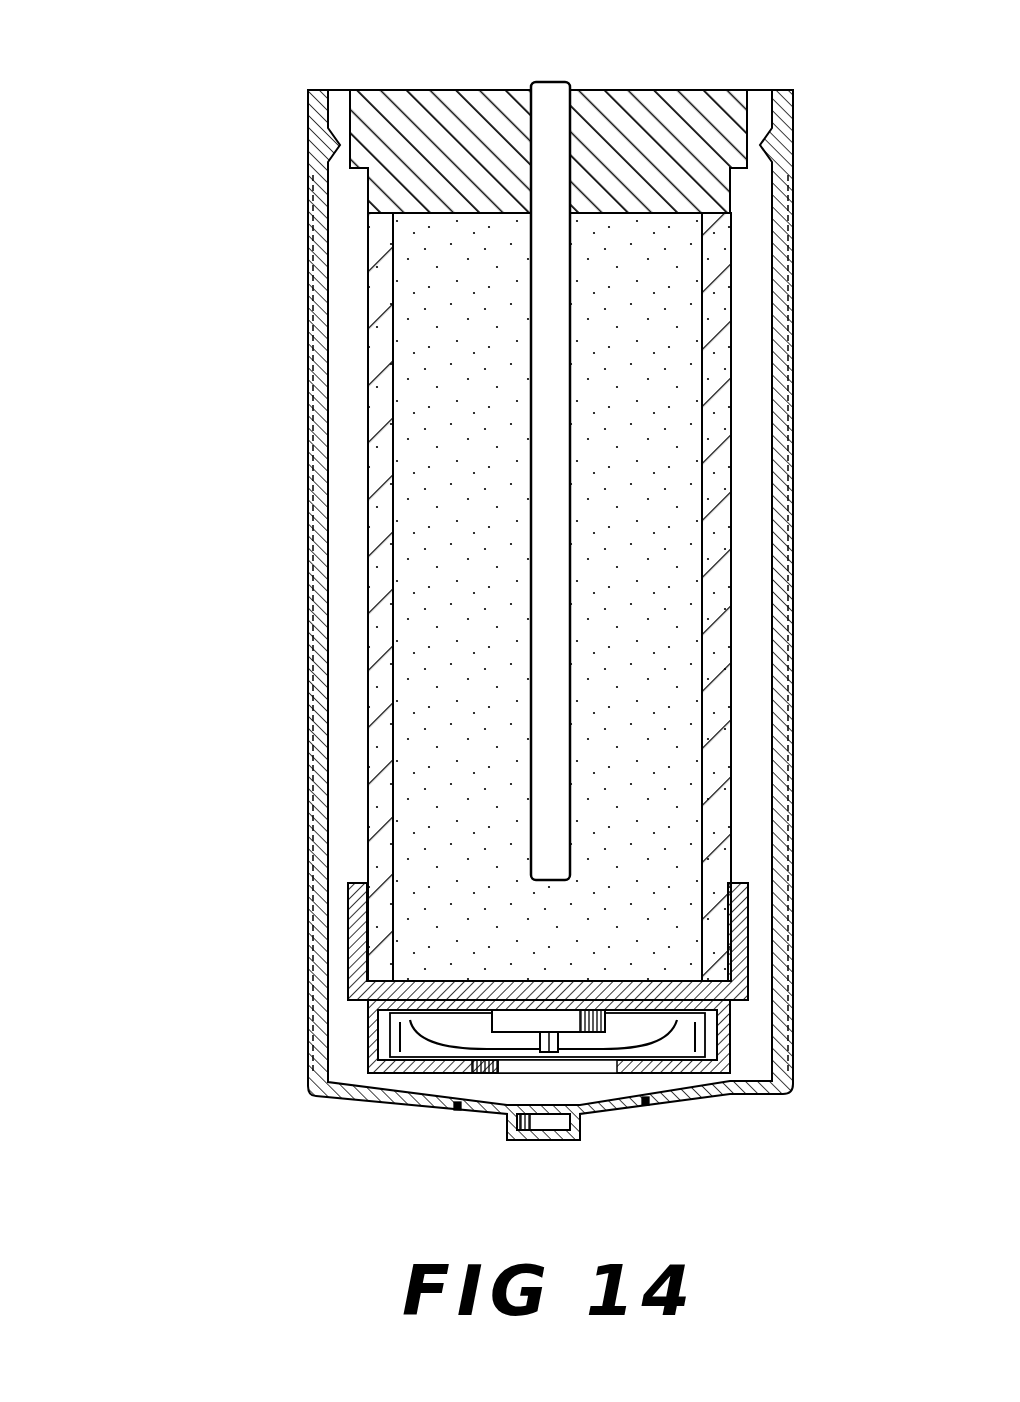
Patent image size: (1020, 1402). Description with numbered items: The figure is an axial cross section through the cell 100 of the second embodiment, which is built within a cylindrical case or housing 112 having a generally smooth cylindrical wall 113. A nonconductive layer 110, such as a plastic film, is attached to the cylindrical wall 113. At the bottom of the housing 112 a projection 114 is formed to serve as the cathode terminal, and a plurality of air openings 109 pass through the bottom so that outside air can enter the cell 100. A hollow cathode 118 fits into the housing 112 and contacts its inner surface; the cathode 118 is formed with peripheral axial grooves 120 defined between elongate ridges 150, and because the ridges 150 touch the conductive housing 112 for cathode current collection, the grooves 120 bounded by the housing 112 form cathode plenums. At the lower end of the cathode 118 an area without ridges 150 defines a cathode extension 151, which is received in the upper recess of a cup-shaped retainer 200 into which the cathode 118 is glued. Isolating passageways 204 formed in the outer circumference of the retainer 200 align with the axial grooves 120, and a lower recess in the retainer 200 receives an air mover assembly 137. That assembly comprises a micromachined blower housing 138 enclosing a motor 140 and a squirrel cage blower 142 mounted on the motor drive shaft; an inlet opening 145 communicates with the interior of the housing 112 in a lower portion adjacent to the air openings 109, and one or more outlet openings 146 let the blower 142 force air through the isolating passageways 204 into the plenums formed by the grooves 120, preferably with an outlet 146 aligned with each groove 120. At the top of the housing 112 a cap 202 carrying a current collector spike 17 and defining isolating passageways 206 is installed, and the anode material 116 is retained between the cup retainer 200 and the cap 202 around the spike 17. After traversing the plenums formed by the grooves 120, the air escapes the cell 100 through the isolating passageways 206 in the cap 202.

The cell 100 is at (186, 86).
The nonconductive layer 110 is at (310, 308).
The housing 112 is at (800, 622).
The cylindrical wall 113 is at (793, 372).
The projection 114 is at (538, 1142).
The active electrode material 116 is at (490, 512).
The current collector spike 17 is at (560, 300).
The cathode 118 is at (722, 712).
The axial grooves 120 is at (750, 772).
The air mover assembly 137 is at (421, 1077).
The blower housing 138 is at (681, 1077).
The motor 140 is at (540, 1022).
The squirrel cage blower 142 is at (398, 1022).
The inlet opening 145 is at (503, 1070).
The outlet opening 146 is at (732, 1038).
The ridges 150 is at (757, 480).
The cathode extension 151 is at (378, 915).
The cup-shaped retainer 200 is at (738, 927).
The cap 202 is at (482, 100).
The isolating passageways 204 is at (340, 962).
The isolating passageways 206 is at (342, 98).
The air openings 109 is at (457, 1112).